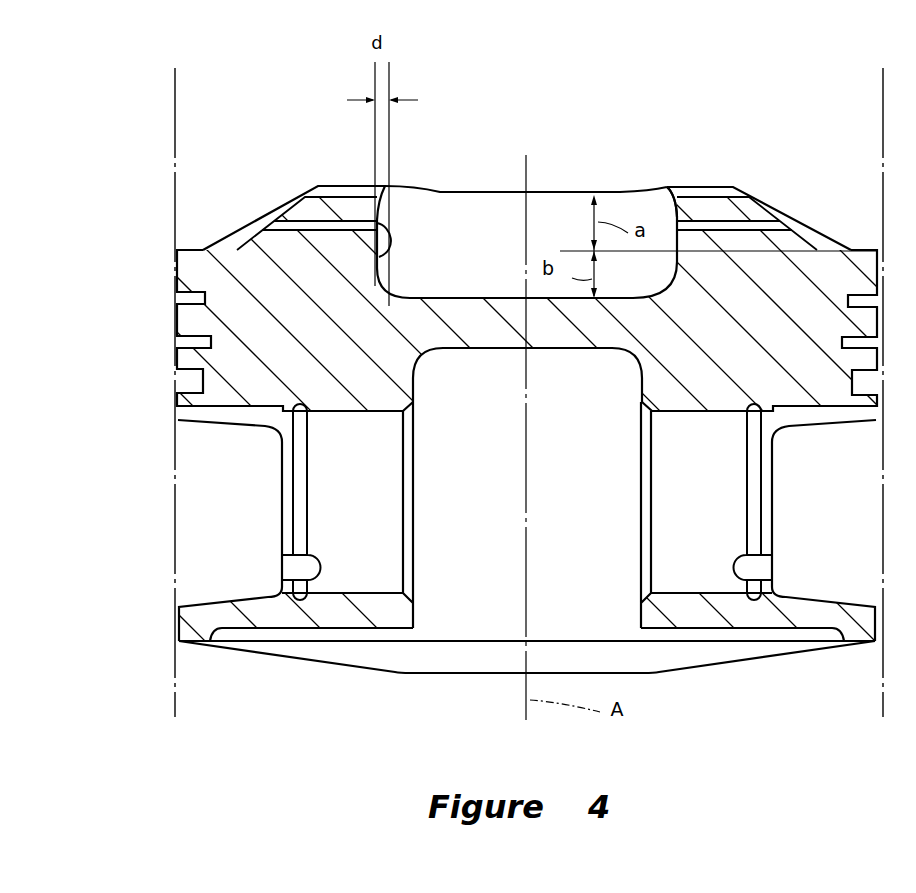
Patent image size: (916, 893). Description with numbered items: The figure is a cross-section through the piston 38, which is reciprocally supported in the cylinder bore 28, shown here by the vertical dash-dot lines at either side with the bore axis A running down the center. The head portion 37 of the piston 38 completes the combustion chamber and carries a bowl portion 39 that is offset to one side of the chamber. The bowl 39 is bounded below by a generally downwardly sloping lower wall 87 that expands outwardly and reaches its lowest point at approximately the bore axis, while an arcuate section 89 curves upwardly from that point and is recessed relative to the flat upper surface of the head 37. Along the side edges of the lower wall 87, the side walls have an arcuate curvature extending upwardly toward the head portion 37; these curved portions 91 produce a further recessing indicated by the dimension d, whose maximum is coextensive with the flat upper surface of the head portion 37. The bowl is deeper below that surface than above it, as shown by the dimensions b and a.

The cylinder bore 28 is at (872, 121).
The head portion 37 is at (197, 250).
The piston 38 is at (168, 406).
The bowl portion 39 is at (546, 192).
The lower wall 87 is at (479, 296).
The arcuate section 89 is at (474, 212).
The curved portions 91 is at (377, 217).